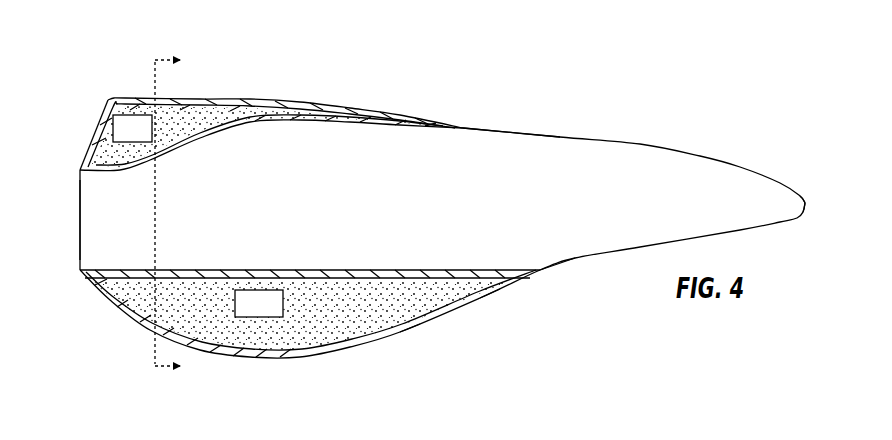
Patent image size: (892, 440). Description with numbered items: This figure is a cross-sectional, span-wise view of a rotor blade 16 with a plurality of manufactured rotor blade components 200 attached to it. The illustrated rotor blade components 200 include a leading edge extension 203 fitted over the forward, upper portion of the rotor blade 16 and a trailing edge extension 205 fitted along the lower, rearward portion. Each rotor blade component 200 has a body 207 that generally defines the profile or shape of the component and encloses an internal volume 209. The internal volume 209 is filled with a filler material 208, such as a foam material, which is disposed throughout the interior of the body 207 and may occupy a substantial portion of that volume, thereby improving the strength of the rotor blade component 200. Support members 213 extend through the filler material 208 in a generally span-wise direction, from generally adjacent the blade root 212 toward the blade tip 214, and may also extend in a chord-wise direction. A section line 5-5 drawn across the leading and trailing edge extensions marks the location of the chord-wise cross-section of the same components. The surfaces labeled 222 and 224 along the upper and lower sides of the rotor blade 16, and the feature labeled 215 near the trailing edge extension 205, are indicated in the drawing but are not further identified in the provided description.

The rotor blade 16 is at (700, 125).
The rotor blade component 200 is at (102, 97).
The leading edge extension 203 is at (346, 104).
The trailing edge extension 205 is at (210, 362).
The body 207 is at (104, 144).
The filler material 208 is at (197, 118).
The internal volume 209 is at (306, 228).
The blade root 212 is at (79, 223).
The support members 213 is at (406, 382).
The blade tip 214 is at (842, 172).
The suction side portion 215 is at (477, 439).
The suction side surface 222 is at (520, 131).
The pressure side surface 224 is at (577, 259).
The section line 5- 5 is at (177, 214).